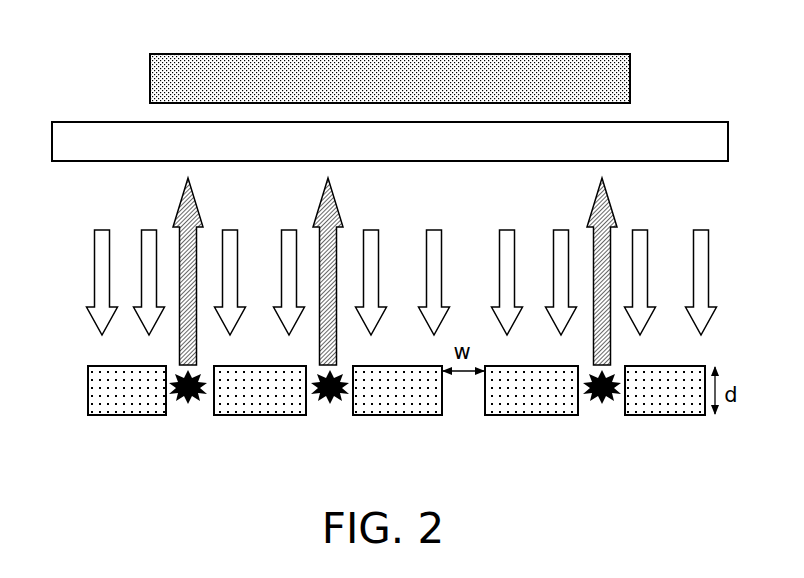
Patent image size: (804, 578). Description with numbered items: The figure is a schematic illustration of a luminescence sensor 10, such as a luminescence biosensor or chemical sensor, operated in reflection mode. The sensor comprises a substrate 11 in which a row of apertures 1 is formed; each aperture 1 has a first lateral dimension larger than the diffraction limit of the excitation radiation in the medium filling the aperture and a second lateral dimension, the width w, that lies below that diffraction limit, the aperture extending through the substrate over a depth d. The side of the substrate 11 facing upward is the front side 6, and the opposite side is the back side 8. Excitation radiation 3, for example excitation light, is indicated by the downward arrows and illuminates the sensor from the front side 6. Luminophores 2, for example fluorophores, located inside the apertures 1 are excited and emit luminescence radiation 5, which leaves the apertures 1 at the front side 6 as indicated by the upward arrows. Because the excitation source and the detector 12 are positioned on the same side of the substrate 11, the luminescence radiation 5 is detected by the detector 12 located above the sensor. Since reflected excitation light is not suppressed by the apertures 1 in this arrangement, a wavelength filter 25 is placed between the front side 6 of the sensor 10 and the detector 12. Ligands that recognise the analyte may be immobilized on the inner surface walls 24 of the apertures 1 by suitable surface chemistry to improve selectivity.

The aperture 1 is at (464, 406).
The luminophore 2 is at (332, 400).
The excitation radiation 3 is at (435, 235).
The luminescence radiation 5 is at (192, 210).
The front side 6 is at (110, 365).
The back side 8 is at (110, 416).
The luminescence sensor 10 is at (76, 237).
The substrate 11 is at (666, 408).
The detector 12 is at (620, 74).
The inner surface walls 24 is at (214, 415).
The wavelength filter 25 is at (105, 122).